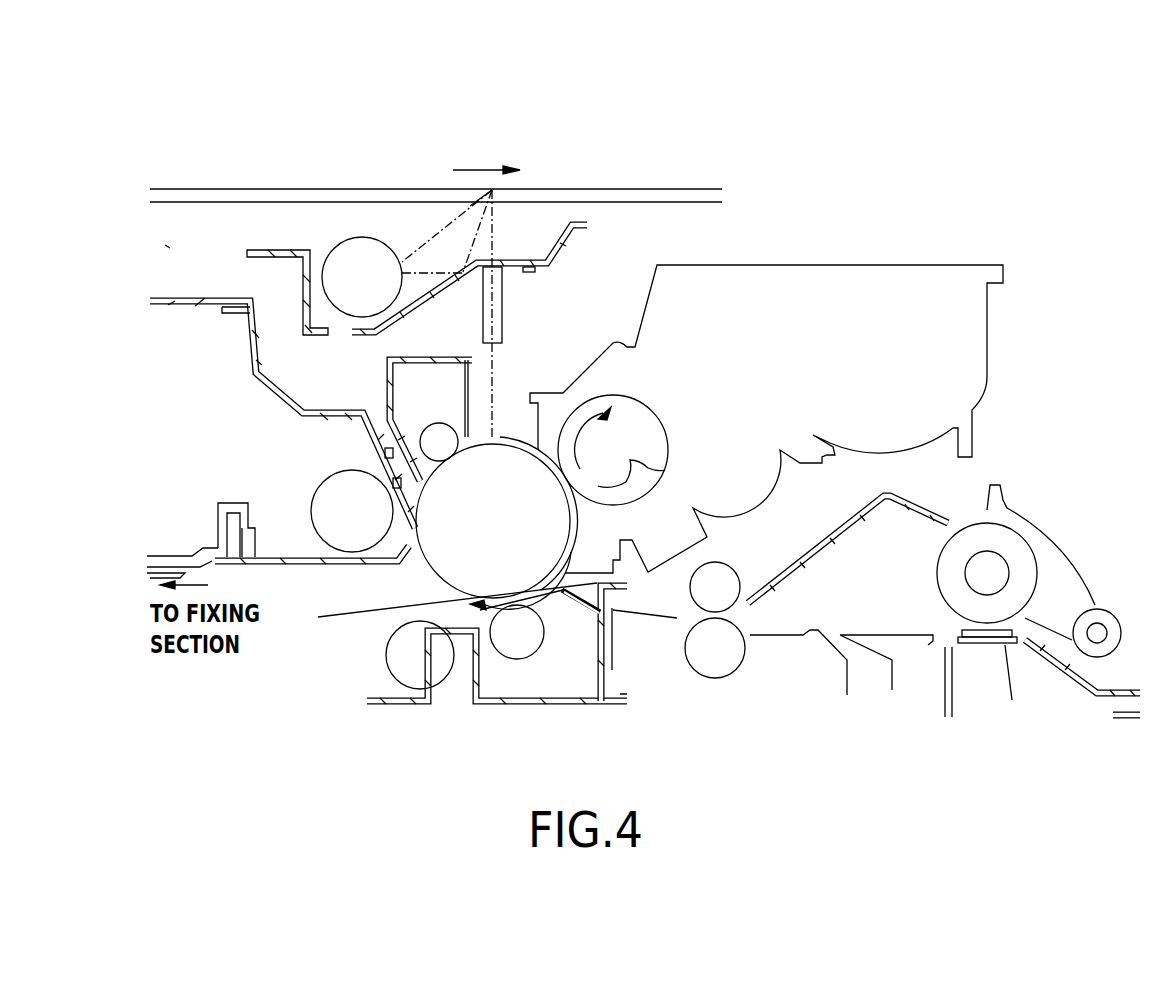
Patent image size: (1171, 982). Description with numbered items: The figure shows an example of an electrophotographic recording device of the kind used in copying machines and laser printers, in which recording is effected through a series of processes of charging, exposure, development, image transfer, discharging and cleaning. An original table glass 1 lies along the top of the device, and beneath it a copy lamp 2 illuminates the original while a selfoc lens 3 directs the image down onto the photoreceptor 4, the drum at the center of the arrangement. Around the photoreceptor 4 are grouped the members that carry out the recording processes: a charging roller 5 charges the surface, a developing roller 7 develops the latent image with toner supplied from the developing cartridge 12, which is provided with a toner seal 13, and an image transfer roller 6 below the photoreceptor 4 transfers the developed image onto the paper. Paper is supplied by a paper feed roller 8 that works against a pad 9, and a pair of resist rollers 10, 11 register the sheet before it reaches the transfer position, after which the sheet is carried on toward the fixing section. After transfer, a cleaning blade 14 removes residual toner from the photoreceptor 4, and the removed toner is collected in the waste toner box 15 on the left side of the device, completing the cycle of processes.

The original table glass 1 is at (302, 192).
The copy lamp 2 is at (343, 255).
The selfoc lens 3 is at (498, 312).
The photoreceptor 4 is at (481, 527).
The charging roller 5 is at (434, 424).
The image transfer roller 6 is at (525, 638).
The developing roller 7 is at (650, 413).
The paper feed roller 8 is at (1023, 550).
The pad 9 is at (960, 623).
The resist roller 10 is at (737, 577).
The resist roller 11 is at (722, 656).
The developing cartridge 12 is at (867, 285).
The toner seal 13 is at (662, 473).
The cleaning blade 14 is at (385, 490).
The waste toner box 15 is at (177, 314).